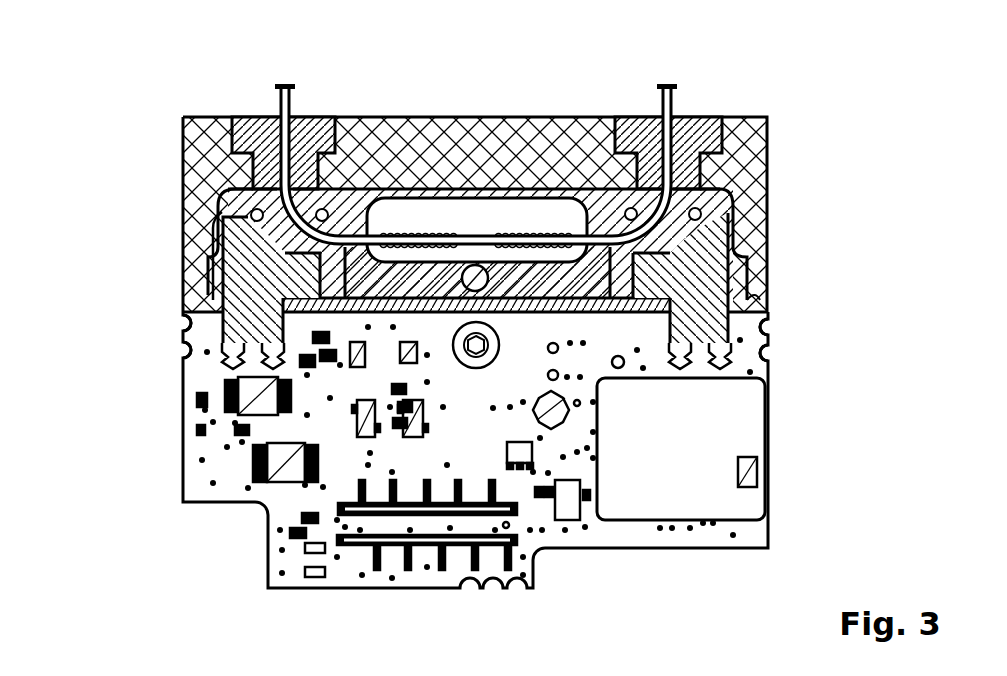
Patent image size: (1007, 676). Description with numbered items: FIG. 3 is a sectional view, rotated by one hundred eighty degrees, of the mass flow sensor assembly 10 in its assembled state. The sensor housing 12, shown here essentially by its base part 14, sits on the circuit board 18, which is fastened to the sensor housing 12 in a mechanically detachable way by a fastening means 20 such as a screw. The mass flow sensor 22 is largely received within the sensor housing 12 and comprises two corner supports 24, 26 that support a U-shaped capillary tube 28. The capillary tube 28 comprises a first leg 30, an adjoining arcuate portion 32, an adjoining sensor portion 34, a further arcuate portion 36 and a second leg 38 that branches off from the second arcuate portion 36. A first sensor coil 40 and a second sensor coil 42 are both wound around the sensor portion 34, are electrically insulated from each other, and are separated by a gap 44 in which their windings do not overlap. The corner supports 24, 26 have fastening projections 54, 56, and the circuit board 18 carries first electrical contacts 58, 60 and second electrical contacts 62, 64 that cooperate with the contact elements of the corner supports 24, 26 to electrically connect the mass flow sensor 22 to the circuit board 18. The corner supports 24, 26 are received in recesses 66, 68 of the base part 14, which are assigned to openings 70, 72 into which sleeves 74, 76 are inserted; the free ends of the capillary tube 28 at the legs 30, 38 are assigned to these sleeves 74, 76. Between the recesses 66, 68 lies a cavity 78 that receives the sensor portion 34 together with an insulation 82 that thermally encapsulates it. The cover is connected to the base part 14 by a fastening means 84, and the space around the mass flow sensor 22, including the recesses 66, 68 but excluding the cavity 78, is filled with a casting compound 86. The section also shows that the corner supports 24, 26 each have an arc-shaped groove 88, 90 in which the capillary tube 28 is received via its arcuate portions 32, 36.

The mass flow sensor assembly 10 is at (446, 318).
The sensor housing 12 is at (446, 177).
The base part 14 is at (758, 135).
The circuit board 18 is at (477, 445).
The fastening means 20 is at (481, 283).
The mass flow sensor 22 is at (712, 103).
The corner support 24 is at (690, 294).
The corner support 26 is at (235, 290).
The capillary tube 28 is at (420, 196).
The first leg 30 is at (676, 112).
The arcuate portion 32 is at (728, 212).
The sensor portion 34 is at (527, 208).
The arcuate portion 36 is at (222, 180).
The second leg 38 is at (271, 113).
The first sensor coil 40 is at (600, 198).
The second sensor coil 42 is at (372, 198).
The gap 44 is at (483, 220).
The fastening projection 54 is at (768, 327).
The fastening projection 56 is at (183, 323).
The first electrical contact 58 is at (768, 355).
The first electrical contact 60 is at (185, 352).
The second electrical contact 62 is at (677, 365).
The second electrical contact 64 is at (270, 358).
The recess 66 is at (720, 178).
The recess 68 is at (205, 245).
The opening 70 is at (725, 108).
The opening 72 is at (232, 112).
The sleeve 74 is at (623, 117).
The sleeve 76 is at (317, 117).
The cavity 78 is at (560, 218).
The insulation 82 is at (395, 220).
The fastening means 84 is at (589, 305).
The casting compound 86 is at (610, 380).
The arc-shaped groove 88 is at (712, 250).
The arc-shaped groove 90 is at (280, 233).